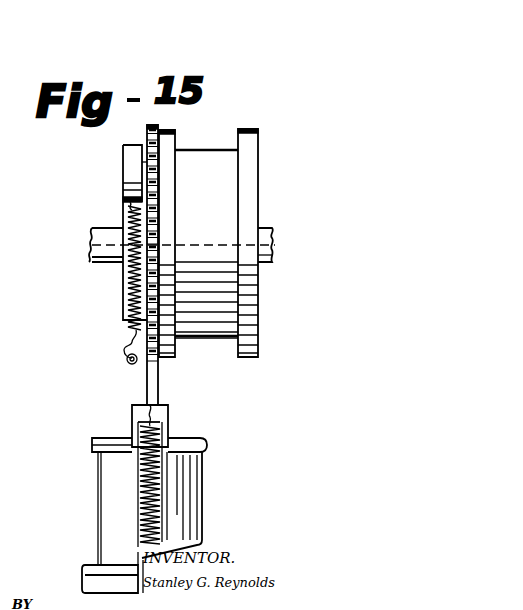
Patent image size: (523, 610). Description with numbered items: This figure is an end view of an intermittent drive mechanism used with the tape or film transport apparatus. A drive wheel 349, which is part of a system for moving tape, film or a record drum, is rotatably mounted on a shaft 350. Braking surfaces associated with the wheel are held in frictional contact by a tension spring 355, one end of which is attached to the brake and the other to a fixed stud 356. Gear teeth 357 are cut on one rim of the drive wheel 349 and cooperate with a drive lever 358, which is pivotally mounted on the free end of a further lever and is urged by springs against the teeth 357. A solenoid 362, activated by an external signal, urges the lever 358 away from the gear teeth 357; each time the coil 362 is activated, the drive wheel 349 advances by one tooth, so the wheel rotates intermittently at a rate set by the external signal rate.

The drive wheel 349 is at (260, 146).
The shaft 350 is at (265, 263).
The tension spring 355 is at (124, 283).
The fixed stud 356 is at (124, 361).
The gear teeth 357 is at (150, 125).
The drive lever 358 is at (153, 374).
The solenoid 362 is at (98, 496).